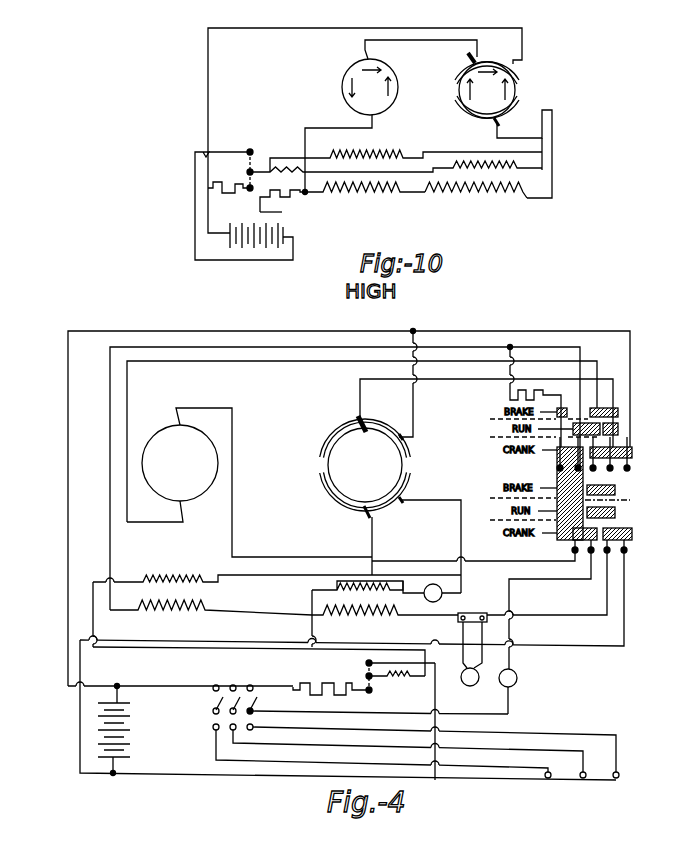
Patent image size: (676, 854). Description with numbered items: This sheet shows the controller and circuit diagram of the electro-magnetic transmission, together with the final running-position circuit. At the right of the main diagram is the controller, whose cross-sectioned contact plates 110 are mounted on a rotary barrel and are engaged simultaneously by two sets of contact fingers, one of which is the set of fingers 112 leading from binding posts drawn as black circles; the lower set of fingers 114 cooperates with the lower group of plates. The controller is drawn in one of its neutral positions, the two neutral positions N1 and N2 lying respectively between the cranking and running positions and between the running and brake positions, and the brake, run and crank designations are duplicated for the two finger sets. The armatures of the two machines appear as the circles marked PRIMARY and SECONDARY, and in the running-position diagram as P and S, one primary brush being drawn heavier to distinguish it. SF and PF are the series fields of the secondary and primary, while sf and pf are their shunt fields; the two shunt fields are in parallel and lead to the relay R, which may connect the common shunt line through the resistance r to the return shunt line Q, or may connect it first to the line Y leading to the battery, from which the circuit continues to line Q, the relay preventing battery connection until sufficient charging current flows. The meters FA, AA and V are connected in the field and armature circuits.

In FIG. 4, the contact plates 110 is at (617, 491).
In FIG. 4, the contact fingers 112 is at (624, 442).
In FIG. 4, the controller contact segments 114 is at (556, 545).
In FIG. 10, the return shunt line Q is at (208, 100).
In FIG. 4, the return shunt line Q is at (68, 492).
In FIG. 10, the battery line Y is at (195, 205).
In FIG. 4, the battery line Y is at (80, 730).
In FIG. 10, the relay R is at (231, 170).
In FIG. 4, the relay R is at (380, 676).
In FIG. 10, the resistance r is at (229, 195).
In FIG. 4, the resistance r is at (331, 699).
In FIG. 10, the shunt field for the secondary sf is at (423, 147).
In FIG. 4, the shunt field for the secondary sf is at (277, 569).
In FIG. 10, the series field for the secondary SF is at (365, 203).
In FIG. 4, the series field for the secondary SF is at (211, 620).
In FIG. 10, the shunt field for the primary pf is at (423, 161).
In FIG. 4, the shunt field for the primary pf is at (357, 575).
In FIG. 10, the series field for the primary PF is at (476, 203).
In FIG. 4, the series field for the primary PF is at (385, 624).
In FIG. 10, the secondary dynamo S is at (370, 87).
In FIG. 10, the primary dynamo P is at (487, 89).
In FIG. 4, the secondary dynamo armature SECONDARY is at (249, 482).
In FIG. 4, the primary dynamo armature PRIMARY is at (390, 504).
In FIG. 4, the field ammeter FA is at (432, 591).
In FIG. 4, the armature ammeter AA is at (471, 654).
In FIG. 4, the voltmeter V is at (545, 632).
In FIG. 4, the neutral position N1 is at (553, 459).
In FIG. 4, the neutral position N2 is at (538, 479).